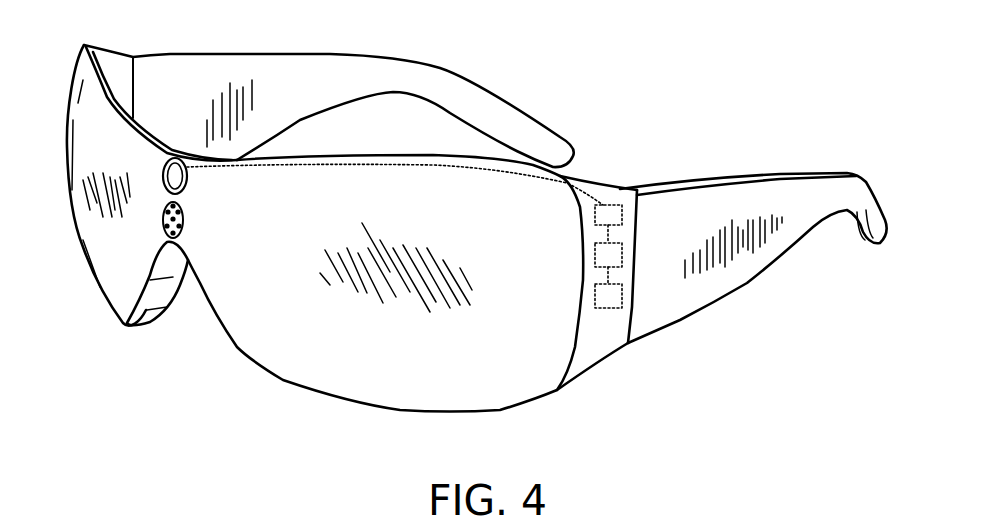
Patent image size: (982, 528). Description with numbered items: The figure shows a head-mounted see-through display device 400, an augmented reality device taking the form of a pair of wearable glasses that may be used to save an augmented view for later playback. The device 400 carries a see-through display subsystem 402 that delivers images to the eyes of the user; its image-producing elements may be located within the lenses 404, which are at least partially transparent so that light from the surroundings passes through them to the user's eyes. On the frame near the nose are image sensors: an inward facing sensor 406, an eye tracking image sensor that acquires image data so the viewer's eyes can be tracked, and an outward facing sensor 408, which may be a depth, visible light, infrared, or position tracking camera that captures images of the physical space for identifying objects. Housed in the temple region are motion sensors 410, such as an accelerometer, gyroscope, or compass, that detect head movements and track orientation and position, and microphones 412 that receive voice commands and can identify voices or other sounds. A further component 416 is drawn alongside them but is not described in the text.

The head-mounted see-through display device 400 is at (620, 67).
The see-through display subsystem 402 is at (272, 348).
The lenses 404 is at (500, 382).
The inward facing sensor 406 is at (188, 226).
The outward facing sensor 408 is at (190, 181).
The motion sensors 410 is at (622, 257).
The microphones 412 is at (622, 297).
The electronic component (communication module) 416 is at (611, 205).